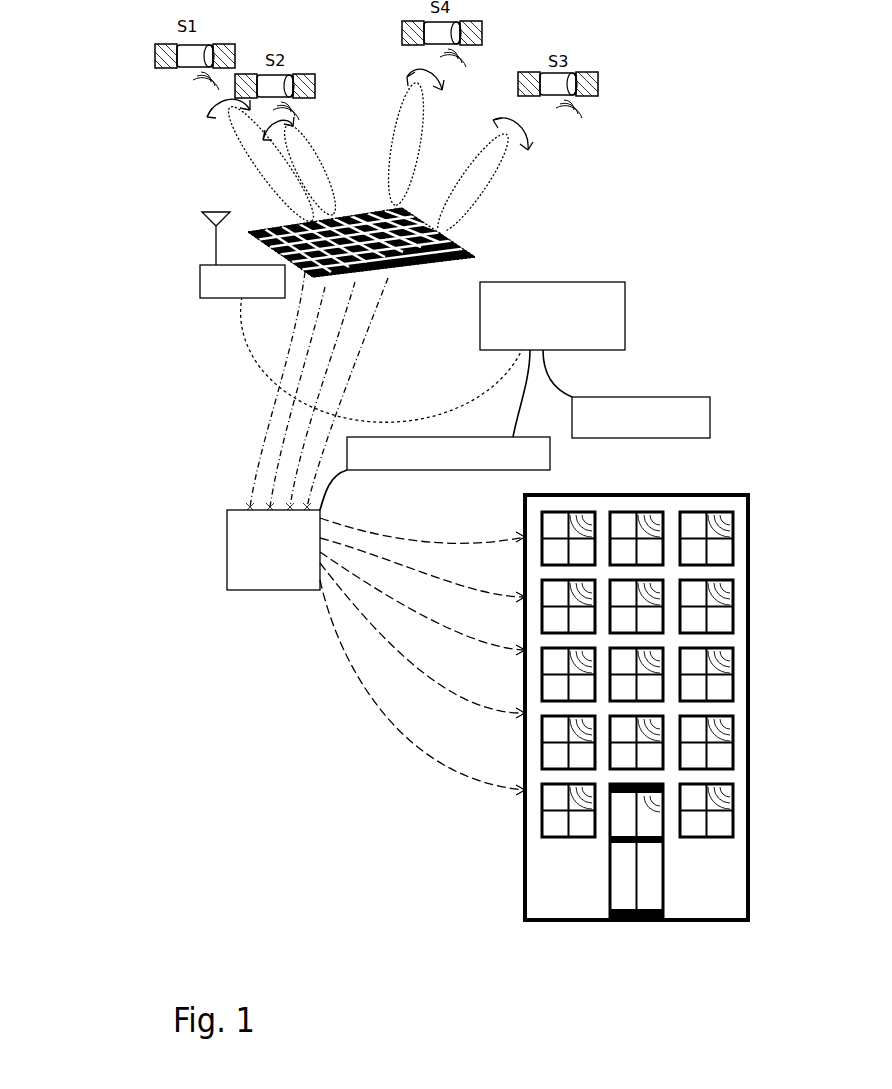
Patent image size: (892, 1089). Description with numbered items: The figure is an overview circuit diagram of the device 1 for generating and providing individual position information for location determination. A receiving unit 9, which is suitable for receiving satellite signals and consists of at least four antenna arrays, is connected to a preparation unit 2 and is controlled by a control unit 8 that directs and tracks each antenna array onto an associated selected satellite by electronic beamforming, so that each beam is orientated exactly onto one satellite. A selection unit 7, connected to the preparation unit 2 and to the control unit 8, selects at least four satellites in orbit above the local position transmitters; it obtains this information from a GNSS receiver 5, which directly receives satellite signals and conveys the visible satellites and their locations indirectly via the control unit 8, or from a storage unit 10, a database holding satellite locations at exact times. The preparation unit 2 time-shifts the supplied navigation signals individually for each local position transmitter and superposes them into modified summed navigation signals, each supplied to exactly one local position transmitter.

The device 1 is at (86, 190).
The preparation unit 2 is at (227, 552).
The GNSS receiver 5 is at (200, 278).
The selection unit 7 is at (406, 437).
The control unit 8 is at (590, 282).
The receiving unit 9 is at (347, 209).
The storage unit 10 is at (710, 397).